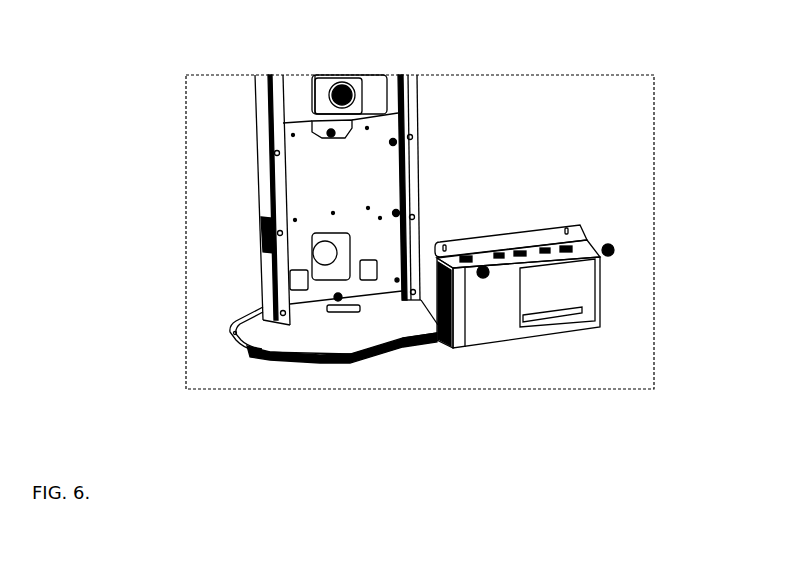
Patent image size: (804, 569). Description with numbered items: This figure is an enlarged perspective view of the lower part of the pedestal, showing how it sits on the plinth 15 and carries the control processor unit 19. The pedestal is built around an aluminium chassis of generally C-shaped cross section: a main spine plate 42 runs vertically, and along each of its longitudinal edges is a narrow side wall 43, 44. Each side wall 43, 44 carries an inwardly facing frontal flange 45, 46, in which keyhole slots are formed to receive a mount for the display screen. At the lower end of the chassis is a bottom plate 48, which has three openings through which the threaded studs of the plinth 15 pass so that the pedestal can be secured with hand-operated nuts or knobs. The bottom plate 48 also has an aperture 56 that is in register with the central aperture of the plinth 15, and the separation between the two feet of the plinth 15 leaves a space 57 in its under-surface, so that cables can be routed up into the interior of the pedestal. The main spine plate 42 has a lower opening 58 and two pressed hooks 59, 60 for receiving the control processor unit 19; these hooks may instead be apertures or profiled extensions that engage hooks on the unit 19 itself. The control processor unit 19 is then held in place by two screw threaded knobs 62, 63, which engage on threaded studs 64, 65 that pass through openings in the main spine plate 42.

The plinth 15 is at (397, 371).
The control processor unit 19 is at (528, 338).
The main spine plate 42 is at (393, 164).
The side wall 43 is at (202, 200).
The side wall 44 is at (470, 128).
The frontal flange 45 is at (202, 200).
The frontal flange 46 is at (412, 270).
The bottom plate 48 is at (298, 374).
The aperture 56 is at (306, 351).
The space 57 is at (380, 343).
The lower opening 58 is at (331, 256).
The pressed hook 59 is at (210, 317).
The pressed hook 60 is at (321, 367).
The screw threaded knob 62 is at (505, 357).
The screw threaded knob 63 is at (660, 219).
The threaded stud 64 is at (437, 185).
The threaded stud 65 is at (318, 84).